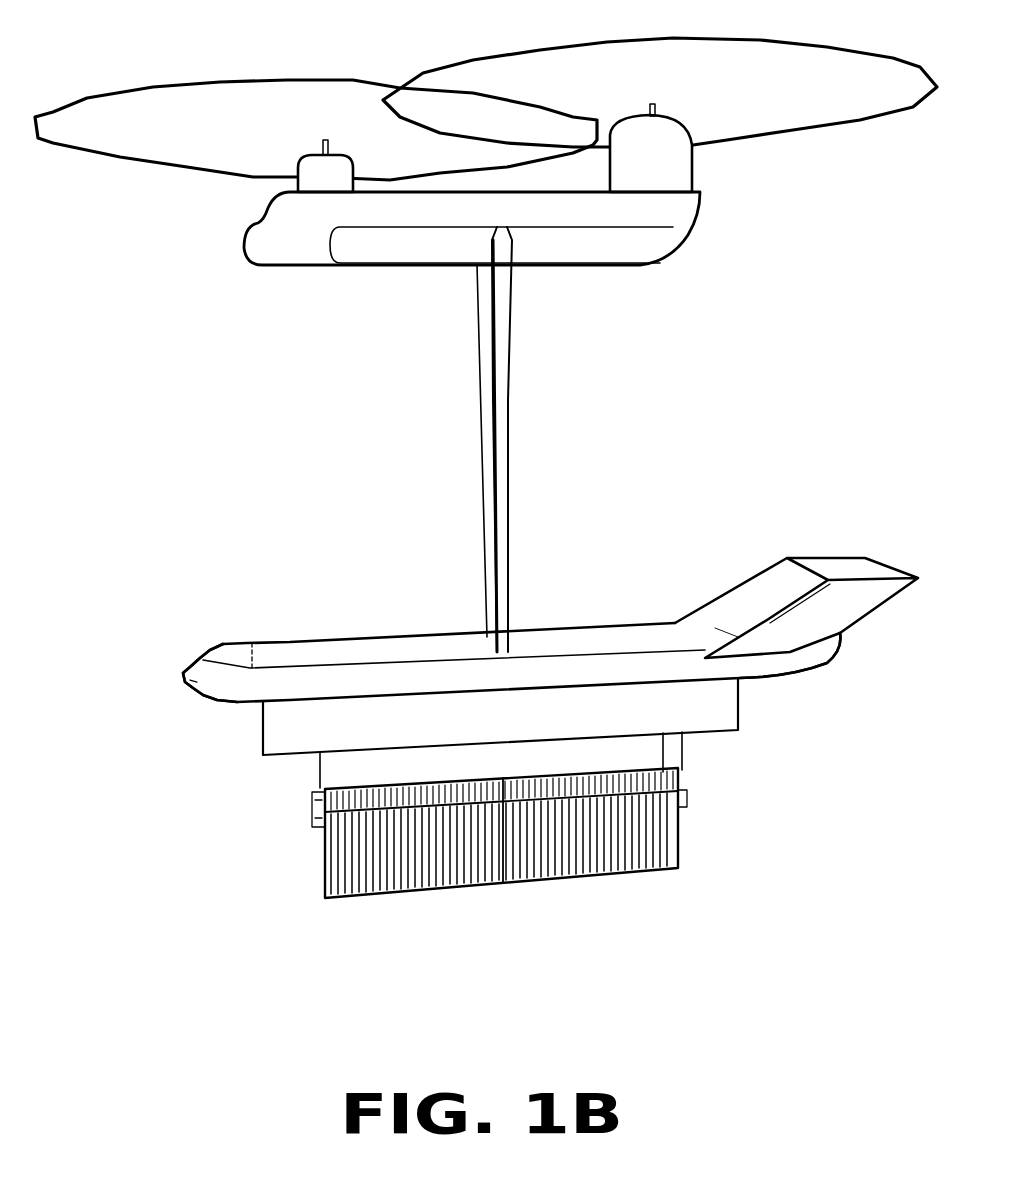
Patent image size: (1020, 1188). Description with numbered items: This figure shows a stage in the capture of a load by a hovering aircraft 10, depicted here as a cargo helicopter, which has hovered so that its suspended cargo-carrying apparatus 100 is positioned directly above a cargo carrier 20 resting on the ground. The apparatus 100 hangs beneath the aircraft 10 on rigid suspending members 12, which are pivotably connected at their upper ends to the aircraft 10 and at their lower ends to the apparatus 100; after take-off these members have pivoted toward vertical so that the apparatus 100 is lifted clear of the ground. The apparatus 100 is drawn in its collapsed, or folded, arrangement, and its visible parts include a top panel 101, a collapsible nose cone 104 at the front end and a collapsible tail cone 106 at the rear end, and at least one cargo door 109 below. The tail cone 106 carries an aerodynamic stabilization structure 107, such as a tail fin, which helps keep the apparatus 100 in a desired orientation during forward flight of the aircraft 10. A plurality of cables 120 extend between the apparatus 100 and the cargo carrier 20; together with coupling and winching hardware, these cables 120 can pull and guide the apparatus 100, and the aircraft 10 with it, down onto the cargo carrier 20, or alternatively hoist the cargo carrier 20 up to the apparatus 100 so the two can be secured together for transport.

The hovering aircraft 10 is at (243, 240).
The rigid suspending members 12 is at (493, 373).
The cargo-carrying apparatus 100 is at (557, 560).
The top panel 101 is at (607, 623).
The collapsible nose cone 104 is at (197, 657).
The collapsible tail cone 106 is at (832, 658).
The aerodynamic stabilization structure 107 is at (820, 557).
The cargo door 109 is at (257, 723).
The cables 120 is at (682, 750).
The cargo carrier 20 is at (628, 873).